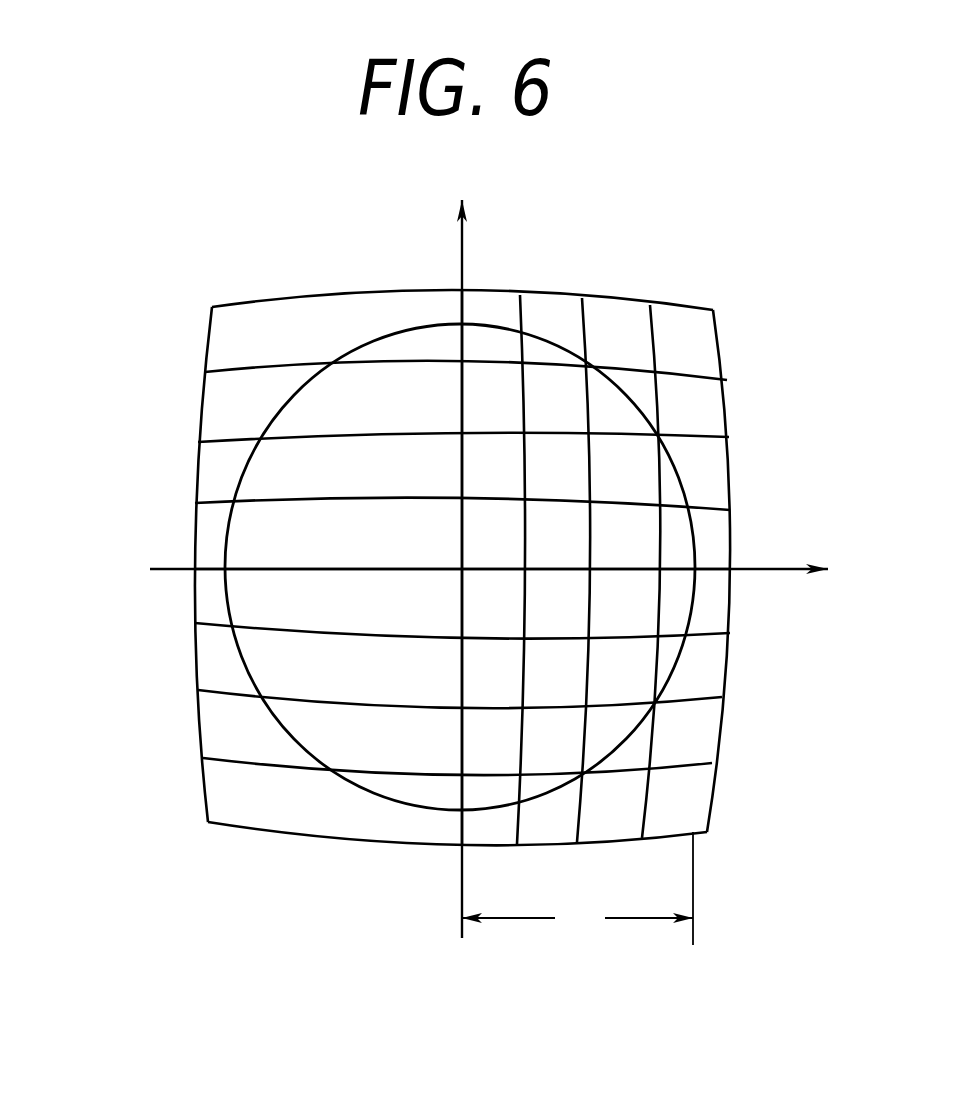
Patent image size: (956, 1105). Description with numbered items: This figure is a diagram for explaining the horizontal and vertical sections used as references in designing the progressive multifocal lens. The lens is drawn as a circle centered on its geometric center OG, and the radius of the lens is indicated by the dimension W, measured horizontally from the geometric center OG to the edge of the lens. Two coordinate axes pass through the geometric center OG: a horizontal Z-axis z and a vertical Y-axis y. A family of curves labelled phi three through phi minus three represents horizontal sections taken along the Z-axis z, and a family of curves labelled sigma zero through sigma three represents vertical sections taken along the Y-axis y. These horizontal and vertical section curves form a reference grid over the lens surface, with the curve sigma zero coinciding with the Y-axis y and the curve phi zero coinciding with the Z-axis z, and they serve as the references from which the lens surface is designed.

The geometric center of the lens OG is at (433, 594).
The radius of the lens W is at (577, 888).
The Y-axis y is at (462, 546).
The Z-axis z is at (499, 569).